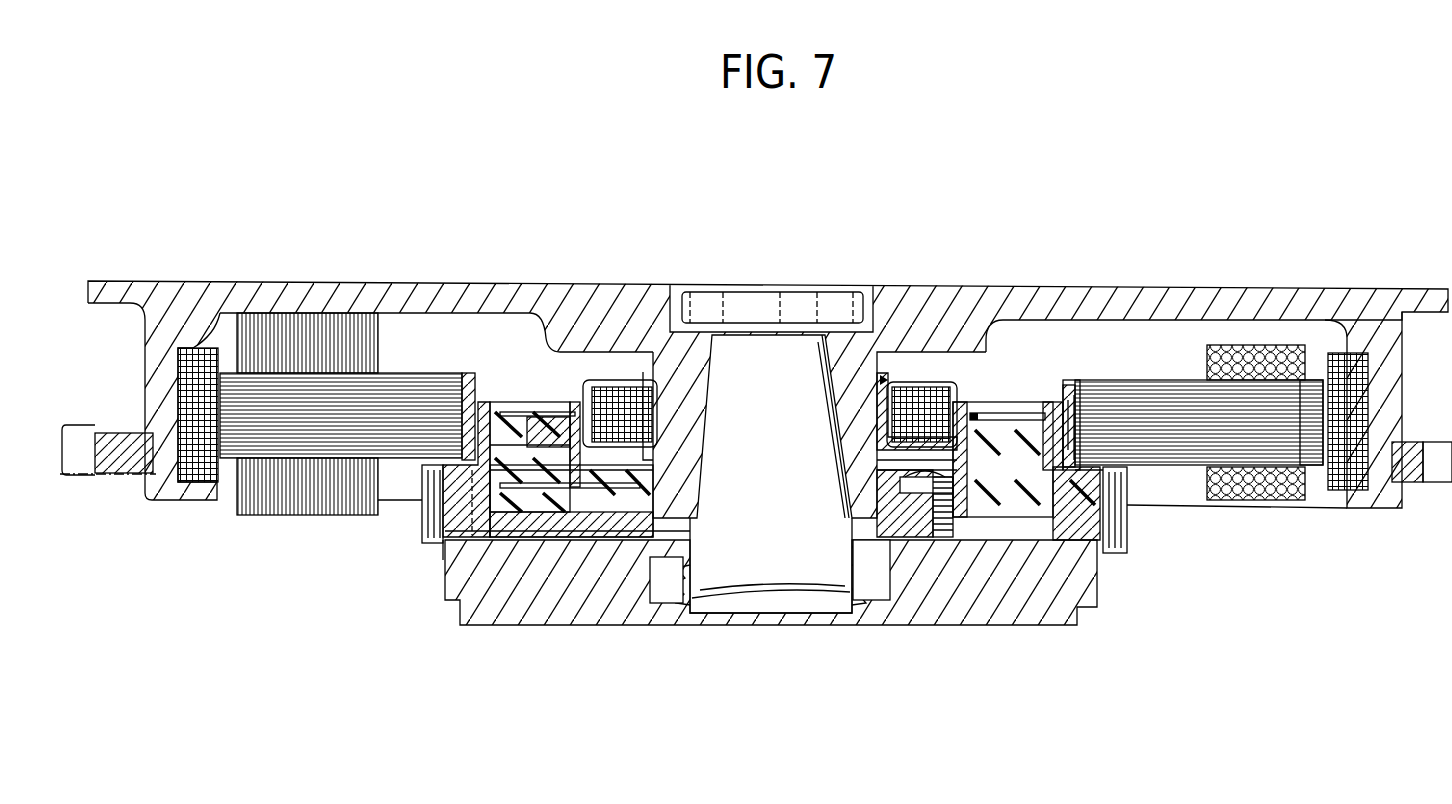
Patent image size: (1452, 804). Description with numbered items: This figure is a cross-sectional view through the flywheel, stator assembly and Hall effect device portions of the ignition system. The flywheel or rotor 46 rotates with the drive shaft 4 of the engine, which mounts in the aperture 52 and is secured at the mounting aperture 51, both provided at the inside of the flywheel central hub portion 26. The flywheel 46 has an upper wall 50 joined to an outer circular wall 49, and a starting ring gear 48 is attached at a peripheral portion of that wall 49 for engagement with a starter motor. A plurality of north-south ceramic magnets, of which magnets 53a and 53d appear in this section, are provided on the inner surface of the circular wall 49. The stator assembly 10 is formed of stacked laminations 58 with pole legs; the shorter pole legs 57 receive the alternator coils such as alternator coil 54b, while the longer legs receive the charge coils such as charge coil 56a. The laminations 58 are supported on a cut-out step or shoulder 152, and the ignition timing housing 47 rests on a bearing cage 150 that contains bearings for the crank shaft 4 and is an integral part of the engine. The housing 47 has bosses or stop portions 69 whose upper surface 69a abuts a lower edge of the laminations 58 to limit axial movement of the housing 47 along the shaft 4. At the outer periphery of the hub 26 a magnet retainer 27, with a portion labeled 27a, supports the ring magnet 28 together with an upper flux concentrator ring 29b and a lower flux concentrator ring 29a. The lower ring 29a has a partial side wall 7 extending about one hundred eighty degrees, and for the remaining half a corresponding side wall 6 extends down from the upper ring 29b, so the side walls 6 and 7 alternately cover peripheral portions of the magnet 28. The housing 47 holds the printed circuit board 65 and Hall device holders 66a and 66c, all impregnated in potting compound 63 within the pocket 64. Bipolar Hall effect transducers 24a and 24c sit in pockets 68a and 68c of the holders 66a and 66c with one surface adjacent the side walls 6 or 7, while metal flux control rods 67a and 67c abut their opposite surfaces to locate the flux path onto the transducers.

The drive shaft 4 is at (770, 582).
The side wall 6 is at (640, 448).
The partial side wall 7 is at (978, 416).
The stator assembly 10 is at (1175, 473).
The bipolar Hall effect transducer 24a is at (578, 403).
The bipolar Hall effect transducer 24c is at (1012, 521).
The flywheel central hub portion 26 is at (848, 443).
The magnet retainer 27 is at (920, 385).
The coil lead 27a is at (884, 381).
The ring magnet 28 is at (965, 400).
The lower flux concentrator ring 29a is at (628, 506).
The upper flux concentrator ring 29b is at (600, 382).
The flywheel 46 is at (756, 359).
The ignition timing housing 47 is at (438, 543).
The starting ring gear 48 is at (1430, 470).
The outer circular wall 49 is at (1392, 354).
The upper wall 50 is at (1272, 300).
The mounting aperture 51 is at (873, 330).
The aperture 52 is at (830, 371).
The ceramic magnet 53a is at (1345, 492).
The ceramic magnet 53d is at (212, 483).
The alternator coil 54b is at (1230, 501).
The charge coil 56a is at (334, 516).
The pole leg 57 is at (1308, 386).
The stacked laminations 58 is at (418, 458).
The potting compound 63 is at (527, 506).
The pocket 64 is at (493, 536).
The printed circuit board 65 is at (548, 506).
The Hall device holder 66a is at (548, 428).
The Hall device holder 66c is at (1012, 420).
The metal flux control rod 67a is at (508, 413).
The metal flux control rod 67c is at (1036, 395).
The pocket 68a is at (577, 403).
The pocket 68c is at (950, 500).
The stop portion 69 is at (455, 553).
The upper surface 69a is at (1108, 470).
The bearing cage 150 is at (950, 600).
The shoulder 152 is at (1114, 470).